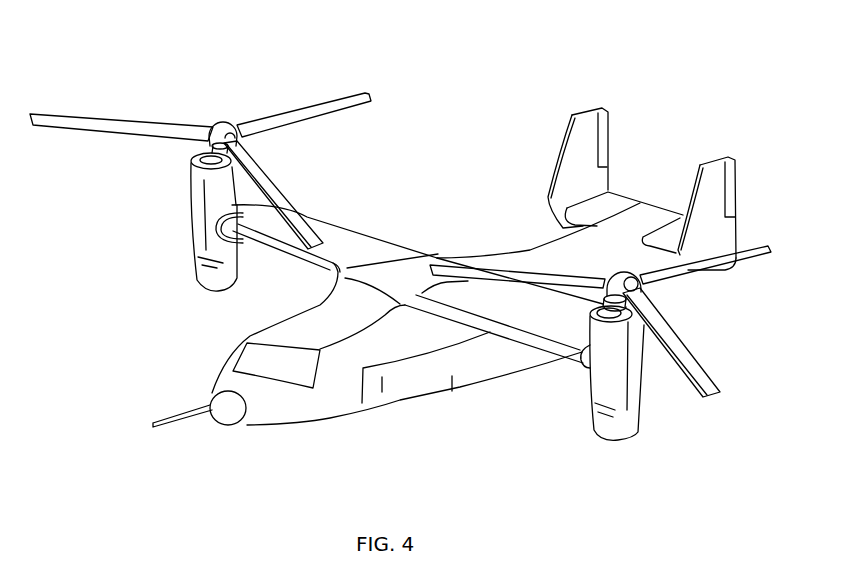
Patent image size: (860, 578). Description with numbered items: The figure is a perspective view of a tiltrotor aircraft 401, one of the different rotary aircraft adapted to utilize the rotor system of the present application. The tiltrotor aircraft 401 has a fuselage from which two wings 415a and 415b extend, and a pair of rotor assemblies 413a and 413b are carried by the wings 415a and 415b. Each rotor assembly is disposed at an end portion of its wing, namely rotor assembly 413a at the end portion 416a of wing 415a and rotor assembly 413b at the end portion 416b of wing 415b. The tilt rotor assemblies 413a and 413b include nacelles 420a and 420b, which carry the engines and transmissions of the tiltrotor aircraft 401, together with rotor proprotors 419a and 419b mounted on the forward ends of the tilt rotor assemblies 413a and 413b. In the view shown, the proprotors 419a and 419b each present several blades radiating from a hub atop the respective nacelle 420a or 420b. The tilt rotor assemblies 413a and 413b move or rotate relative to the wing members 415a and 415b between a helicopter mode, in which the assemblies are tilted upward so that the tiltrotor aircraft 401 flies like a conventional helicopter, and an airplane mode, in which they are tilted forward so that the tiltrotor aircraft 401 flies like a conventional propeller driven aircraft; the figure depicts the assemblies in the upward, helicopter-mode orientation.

The tiltrotor aircraft 401 is at (143, 57).
The rotor assembly 413a is at (148, 163).
The rotor assembly 413b is at (718, 345).
The wing 415a is at (348, 228).
The wing 415b is at (492, 334).
The end portion 416a is at (262, 194).
The end portion 416b is at (577, 316).
The rotor proprotor 419a is at (300, 97).
The rotor proprotor 419b is at (662, 308).
The nacelle 420a is at (188, 246).
The nacelle 420b is at (638, 415).